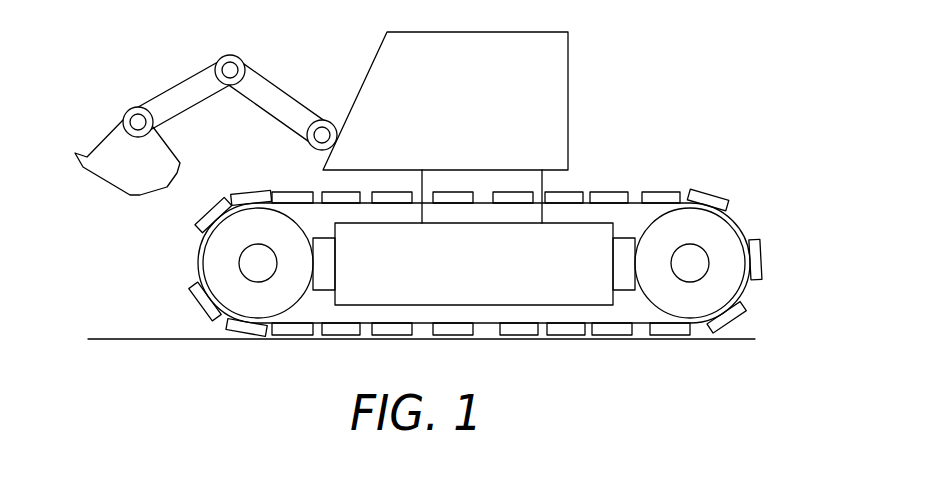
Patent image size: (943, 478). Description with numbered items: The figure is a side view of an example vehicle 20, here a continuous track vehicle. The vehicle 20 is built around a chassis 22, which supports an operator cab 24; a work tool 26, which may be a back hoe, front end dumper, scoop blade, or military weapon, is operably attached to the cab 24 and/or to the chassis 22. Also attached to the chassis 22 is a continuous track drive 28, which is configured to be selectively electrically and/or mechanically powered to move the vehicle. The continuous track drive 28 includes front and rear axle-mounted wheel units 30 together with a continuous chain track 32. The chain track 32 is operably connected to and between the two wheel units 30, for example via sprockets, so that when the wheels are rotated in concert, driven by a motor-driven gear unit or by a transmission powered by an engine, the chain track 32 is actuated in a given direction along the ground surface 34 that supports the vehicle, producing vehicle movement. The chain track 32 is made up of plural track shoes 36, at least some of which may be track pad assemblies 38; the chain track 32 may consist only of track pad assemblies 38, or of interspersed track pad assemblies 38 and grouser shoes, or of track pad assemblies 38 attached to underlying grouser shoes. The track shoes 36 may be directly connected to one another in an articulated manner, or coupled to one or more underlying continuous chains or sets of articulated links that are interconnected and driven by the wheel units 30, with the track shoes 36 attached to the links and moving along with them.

The vehicle 20 is at (746, 139).
The chassis 22 is at (473, 305).
The operator cab 24 is at (570, 100).
The work tool 26 is at (107, 138).
The continuous track drive 28 is at (756, 228).
The wheel units 30 is at (223, 263).
The continuous chain track 32 is at (635, 200).
The ground surface 34 is at (702, 343).
The track shoes 36 is at (766, 176).
The track pad assemblies 38 is at (707, 193).